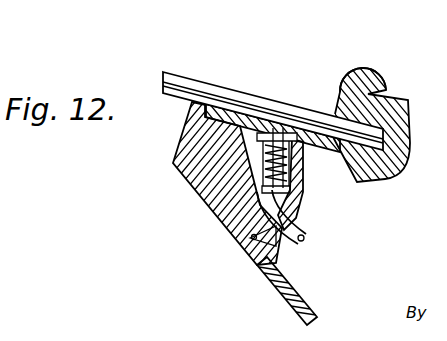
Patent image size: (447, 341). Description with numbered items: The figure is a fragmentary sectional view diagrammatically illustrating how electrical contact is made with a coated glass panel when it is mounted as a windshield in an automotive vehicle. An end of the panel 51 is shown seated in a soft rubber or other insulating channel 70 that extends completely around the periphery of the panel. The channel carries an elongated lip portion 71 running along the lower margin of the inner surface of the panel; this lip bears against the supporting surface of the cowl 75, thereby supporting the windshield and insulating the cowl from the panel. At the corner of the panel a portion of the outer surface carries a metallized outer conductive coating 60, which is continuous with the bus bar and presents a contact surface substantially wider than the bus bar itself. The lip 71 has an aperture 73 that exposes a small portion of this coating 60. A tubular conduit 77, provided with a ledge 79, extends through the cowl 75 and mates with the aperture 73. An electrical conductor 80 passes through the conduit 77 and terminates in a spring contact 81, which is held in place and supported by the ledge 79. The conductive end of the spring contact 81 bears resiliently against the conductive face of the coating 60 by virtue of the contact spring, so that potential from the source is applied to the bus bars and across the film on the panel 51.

The panel 51 is at (187, 71).
The outer conductive coating 60 is at (346, 158).
The insulating channel 70 is at (375, 80).
The lip portion 71 is at (240, 127).
The aperture 73 is at (293, 124).
The cowl 75 is at (212, 205).
The tubular conduit 77 is at (302, 240).
The ledge 79 is at (250, 240).
The electrical conductor 80 is at (303, 242).
The spring contact 81 is at (285, 135).